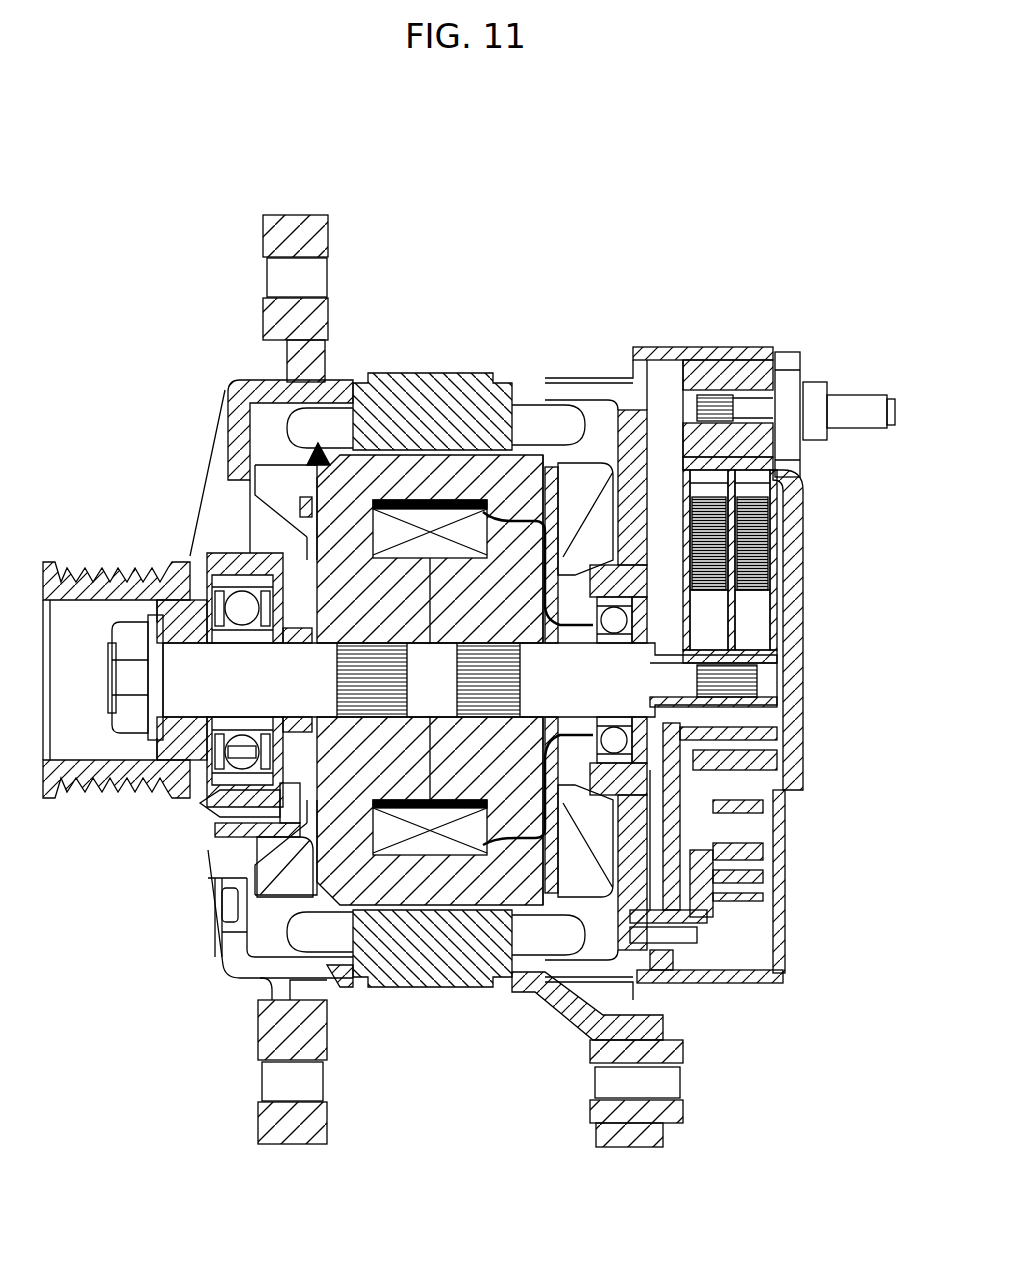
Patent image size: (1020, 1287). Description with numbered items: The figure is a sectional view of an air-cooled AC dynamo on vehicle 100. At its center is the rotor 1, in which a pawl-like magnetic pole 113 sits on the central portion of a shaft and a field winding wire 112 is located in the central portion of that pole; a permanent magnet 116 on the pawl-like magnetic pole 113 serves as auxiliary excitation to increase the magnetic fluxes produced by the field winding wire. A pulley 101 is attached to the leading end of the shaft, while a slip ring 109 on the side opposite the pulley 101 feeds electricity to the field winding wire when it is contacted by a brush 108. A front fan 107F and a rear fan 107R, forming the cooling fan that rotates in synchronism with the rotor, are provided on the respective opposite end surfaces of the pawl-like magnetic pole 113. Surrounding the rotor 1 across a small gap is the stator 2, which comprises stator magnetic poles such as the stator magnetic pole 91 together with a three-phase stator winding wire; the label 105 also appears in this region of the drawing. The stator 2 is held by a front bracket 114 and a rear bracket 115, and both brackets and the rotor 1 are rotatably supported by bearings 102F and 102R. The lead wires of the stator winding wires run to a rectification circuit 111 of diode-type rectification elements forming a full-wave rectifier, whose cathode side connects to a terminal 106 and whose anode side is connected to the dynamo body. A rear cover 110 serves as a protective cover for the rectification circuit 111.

The air-cooled AC dynamo on vehicle 100 is at (180, 268).
The rotor 1 is at (318, 458).
The stator 2 is at (410, 372).
The stator magnetic pole 91 is at (392, 440).
The pulley 101 is at (70, 767).
The bearing 102F is at (237, 587).
The bearing 102R is at (640, 747).
The stator winding 105 is at (530, 427).
The terminal 106 is at (850, 407).
The front fan 107F is at (270, 873).
The rear fan 107R is at (593, 487).
The brush 108 is at (753, 590).
The slip ring 109 is at (767, 648).
The rear cover 110 is at (783, 862).
The rectification circuit 111 is at (712, 885).
The field winding wire 112 is at (430, 843).
The pawl-like magnetic pole 113 is at (382, 885).
The front bracket 114 is at (250, 960).
The rear bracket 115 is at (582, 387).
The permanent magnet 116 is at (493, 887).